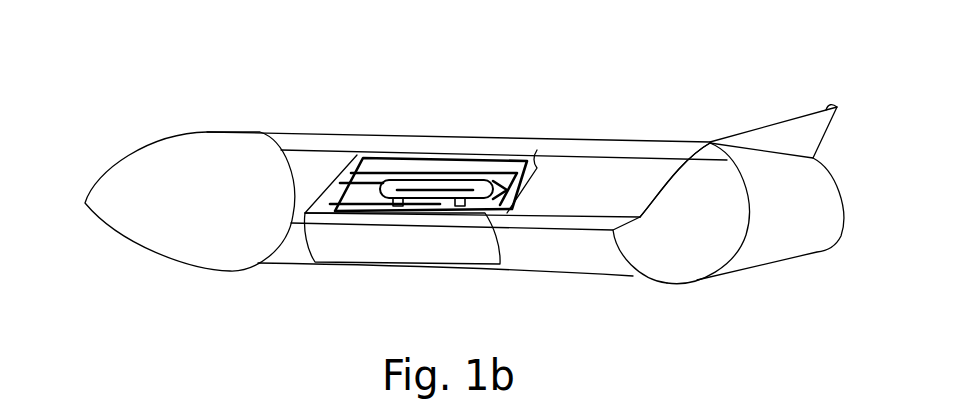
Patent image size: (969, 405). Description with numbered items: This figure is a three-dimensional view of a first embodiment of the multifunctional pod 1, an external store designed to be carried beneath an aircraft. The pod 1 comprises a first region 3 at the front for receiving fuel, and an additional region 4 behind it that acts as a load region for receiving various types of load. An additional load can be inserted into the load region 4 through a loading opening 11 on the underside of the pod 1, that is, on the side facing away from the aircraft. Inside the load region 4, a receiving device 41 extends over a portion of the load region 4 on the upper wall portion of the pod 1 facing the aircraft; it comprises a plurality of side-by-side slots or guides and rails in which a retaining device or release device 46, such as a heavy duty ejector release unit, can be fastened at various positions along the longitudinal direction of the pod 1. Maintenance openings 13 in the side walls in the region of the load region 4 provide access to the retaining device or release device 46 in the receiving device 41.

The multifunctional pod 1 is at (211, 84).
The first region 3 is at (170, 170).
The additional region 4 is at (640, 277).
The loading opening 11 is at (663, 180).
The maintenance openings 13 is at (418, 255).
The receiving device 41 is at (357, 160).
The retaining device or release device 46 is at (363, 167).